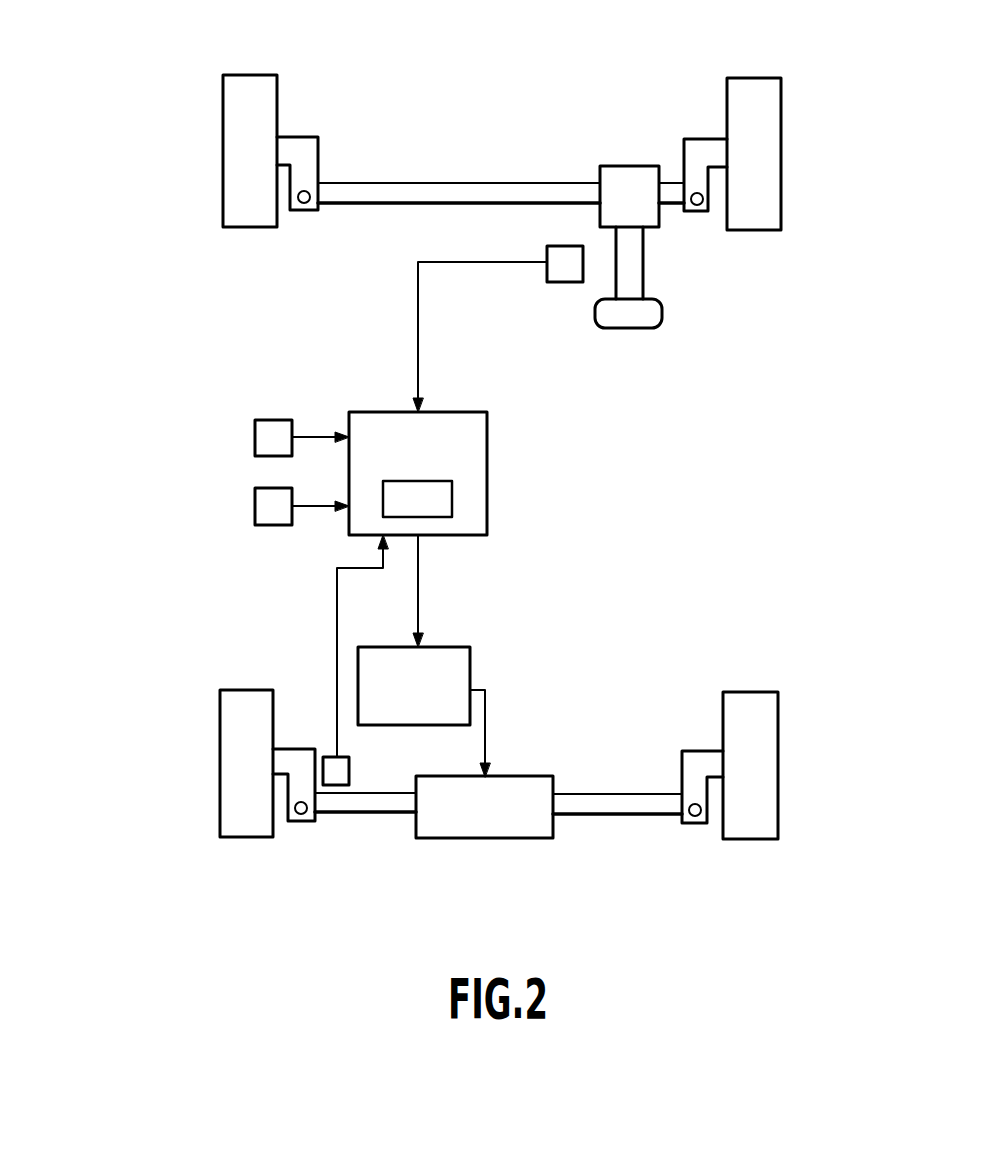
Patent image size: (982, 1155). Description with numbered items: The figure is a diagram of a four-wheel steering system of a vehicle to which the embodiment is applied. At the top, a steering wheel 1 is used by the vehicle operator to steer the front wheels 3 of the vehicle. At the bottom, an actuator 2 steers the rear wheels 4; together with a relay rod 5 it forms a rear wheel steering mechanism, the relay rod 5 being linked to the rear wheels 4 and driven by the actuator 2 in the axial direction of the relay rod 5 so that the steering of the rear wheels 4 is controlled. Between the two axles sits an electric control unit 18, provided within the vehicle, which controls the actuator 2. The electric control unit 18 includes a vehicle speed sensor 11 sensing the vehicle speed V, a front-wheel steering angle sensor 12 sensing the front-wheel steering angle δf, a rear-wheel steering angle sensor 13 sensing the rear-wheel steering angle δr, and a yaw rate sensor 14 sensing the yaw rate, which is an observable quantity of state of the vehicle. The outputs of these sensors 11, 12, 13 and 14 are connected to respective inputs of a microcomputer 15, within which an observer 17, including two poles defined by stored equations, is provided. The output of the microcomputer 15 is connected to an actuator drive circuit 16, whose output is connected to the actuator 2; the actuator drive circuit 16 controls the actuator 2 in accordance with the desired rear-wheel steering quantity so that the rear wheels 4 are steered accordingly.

The steering wheel 1 is at (722, 298).
The actuator 2 is at (520, 838).
The front wheels 3 is at (268, 27).
The rear wheels 4 is at (252, 837).
The relay rod 5 is at (372, 815).
The vehicle speed sensor 11 is at (272, 430).
The front-wheel steering angle sensor 12 is at (565, 270).
The rear-wheel steering angle sensor 13 is at (329, 764).
The yaw rate sensor 14 is at (282, 525).
The microcomputer 15 is at (472, 450).
The actuator drive circuit 16 is at (585, 656).
The observer 17 is at (433, 505).
The electric control unit 18 is at (420, 543).